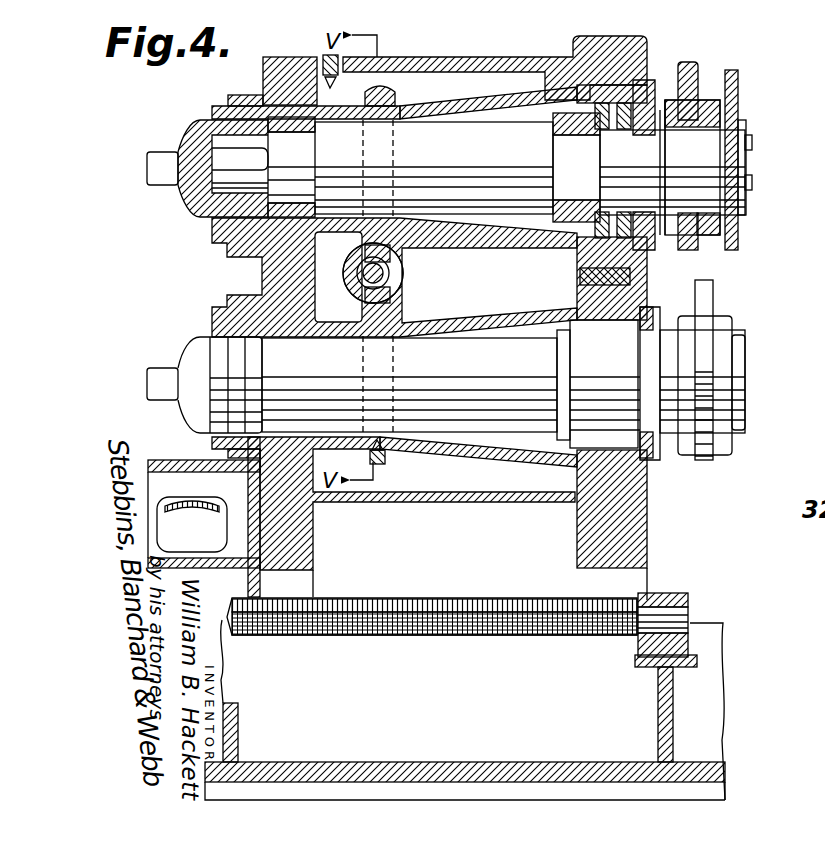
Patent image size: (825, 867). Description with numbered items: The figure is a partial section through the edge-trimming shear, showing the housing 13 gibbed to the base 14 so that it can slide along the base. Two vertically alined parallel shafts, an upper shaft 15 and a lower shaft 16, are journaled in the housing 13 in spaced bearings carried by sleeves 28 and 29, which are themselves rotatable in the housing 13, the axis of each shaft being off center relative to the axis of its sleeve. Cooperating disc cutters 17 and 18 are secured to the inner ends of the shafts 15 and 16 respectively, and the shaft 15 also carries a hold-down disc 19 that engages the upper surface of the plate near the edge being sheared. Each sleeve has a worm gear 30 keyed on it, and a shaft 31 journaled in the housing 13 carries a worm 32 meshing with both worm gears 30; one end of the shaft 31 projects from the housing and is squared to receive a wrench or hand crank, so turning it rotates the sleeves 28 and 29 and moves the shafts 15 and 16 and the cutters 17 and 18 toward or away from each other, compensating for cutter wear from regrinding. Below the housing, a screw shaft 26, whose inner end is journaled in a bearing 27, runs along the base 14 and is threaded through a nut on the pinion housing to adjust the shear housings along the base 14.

The housing 13 is at (397, 318).
The base 14 is at (672, 707).
The upper shaft 15 is at (470, 143).
The lower shaft 16 is at (470, 357).
The disc cutter 17 is at (697, 68).
The disc cutter 18 is at (710, 292).
The hold-down disc 19 is at (738, 92).
The screw shaft 26 is at (393, 597).
The bearing 27 is at (668, 593).
The sleeve 28 is at (448, 102).
The sleeve 29 is at (472, 450).
The worm gear 30 is at (378, 86).
The shaft 31 is at (390, 270).
The worm 32 is at (400, 273).